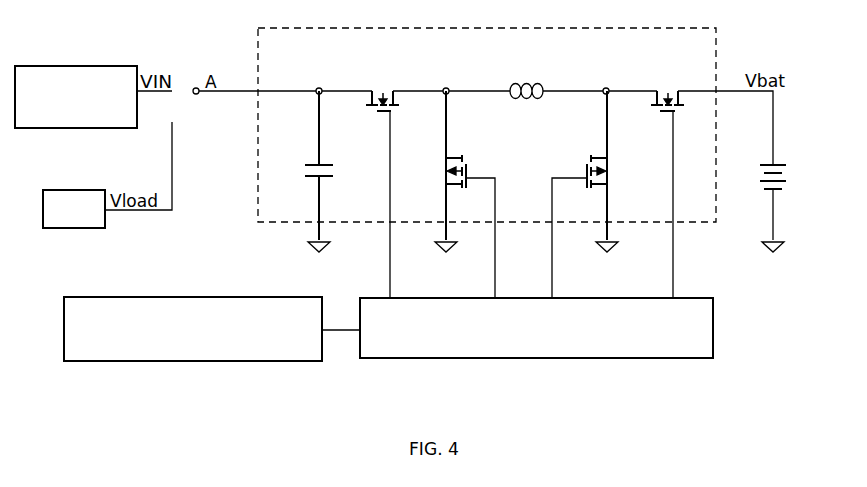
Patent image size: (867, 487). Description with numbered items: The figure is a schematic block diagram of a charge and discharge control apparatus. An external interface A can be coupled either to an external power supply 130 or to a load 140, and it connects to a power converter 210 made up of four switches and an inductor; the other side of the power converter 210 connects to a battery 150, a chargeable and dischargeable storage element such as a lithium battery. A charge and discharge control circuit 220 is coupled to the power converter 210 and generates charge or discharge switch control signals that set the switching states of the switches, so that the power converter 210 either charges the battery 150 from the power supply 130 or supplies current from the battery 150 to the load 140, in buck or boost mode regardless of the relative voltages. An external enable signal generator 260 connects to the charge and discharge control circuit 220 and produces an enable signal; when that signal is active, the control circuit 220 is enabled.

The external power supply 130 is at (92, 66).
The load 140 is at (78, 190).
The battery 150 is at (785, 165).
The power converter 210 is at (300, 57).
The charge and discharge control circuit 220 is at (682, 337).
The external enable signal generator 260 is at (249, 351).